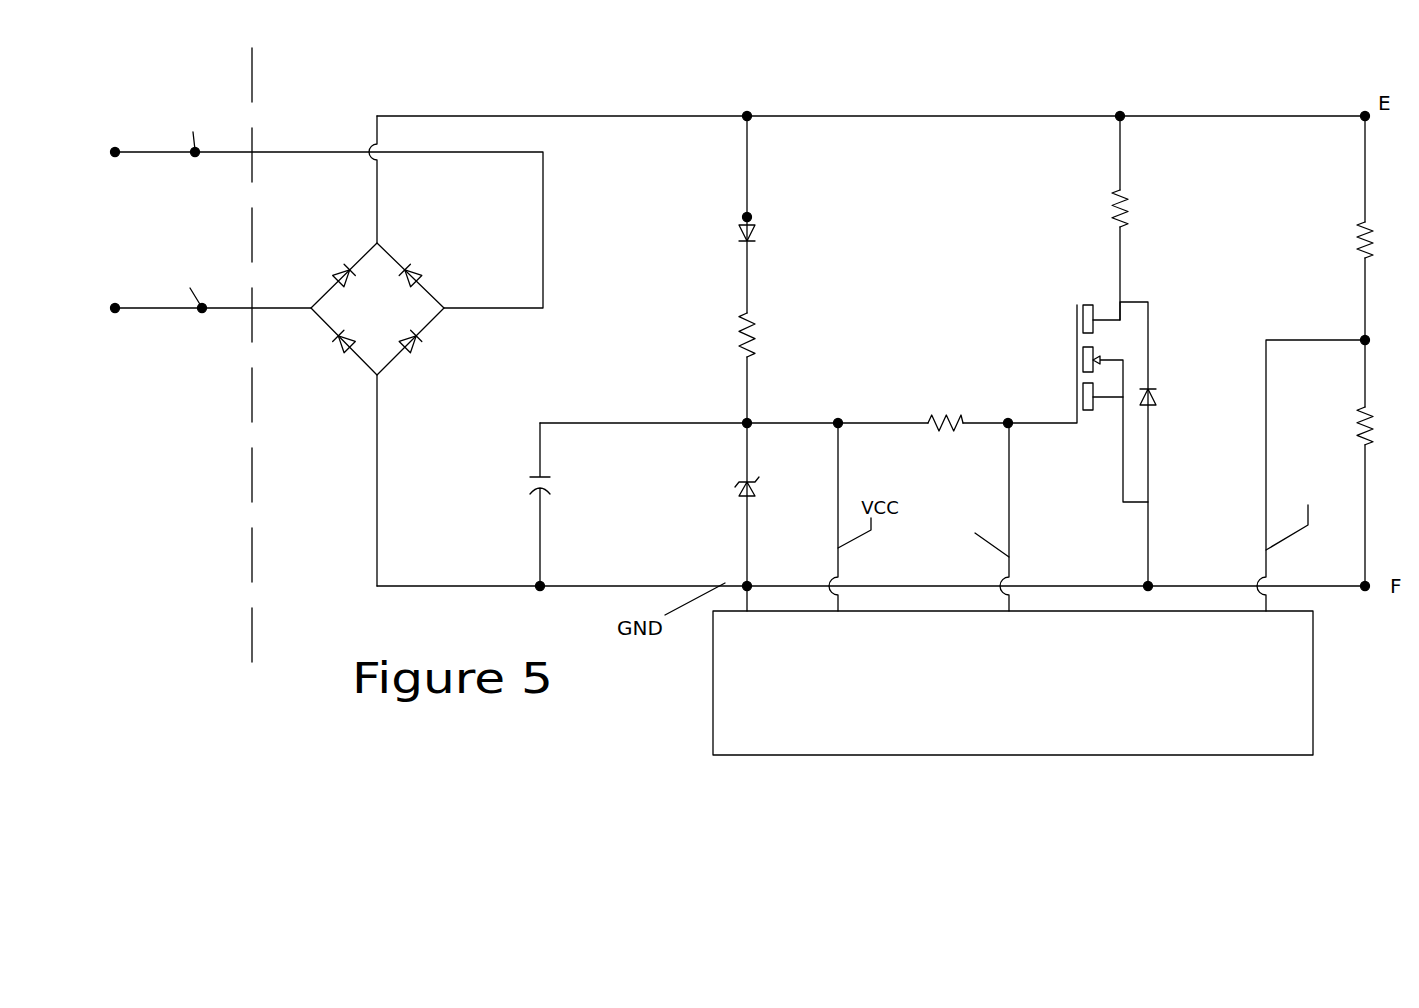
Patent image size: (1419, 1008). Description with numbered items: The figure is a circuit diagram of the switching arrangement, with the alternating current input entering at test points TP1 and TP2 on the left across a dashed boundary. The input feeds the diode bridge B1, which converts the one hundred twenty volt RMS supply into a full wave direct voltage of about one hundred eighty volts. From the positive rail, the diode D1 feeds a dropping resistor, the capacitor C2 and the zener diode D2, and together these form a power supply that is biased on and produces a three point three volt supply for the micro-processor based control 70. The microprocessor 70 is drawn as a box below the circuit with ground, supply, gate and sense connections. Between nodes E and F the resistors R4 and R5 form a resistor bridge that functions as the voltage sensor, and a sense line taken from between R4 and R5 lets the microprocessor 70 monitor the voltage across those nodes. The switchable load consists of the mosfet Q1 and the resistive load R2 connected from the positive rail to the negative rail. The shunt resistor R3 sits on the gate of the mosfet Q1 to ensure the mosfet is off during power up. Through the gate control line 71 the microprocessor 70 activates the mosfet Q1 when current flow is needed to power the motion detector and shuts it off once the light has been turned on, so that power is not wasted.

The microprocessor 70 is at (1307, 702).
The gate control line 71 is at (1156, 475).
The diode bridge B1 is at (368, 297).
The diode D1 is at (774, 213).
The zener diode D2 is at (722, 517).
The capacitor C2 is at (564, 504).
The mosfet Q1 is at (1135, 444).
The resistive load R2 is at (960, 268).
The shunt resistor R3 is at (944, 398).
The resistor R4 is at (1388, 230).
The resistor R5 is at (1388, 463).
The test point 1 TP1 is at (316, 209).
The test point 2 TP2 is at (200, 295).